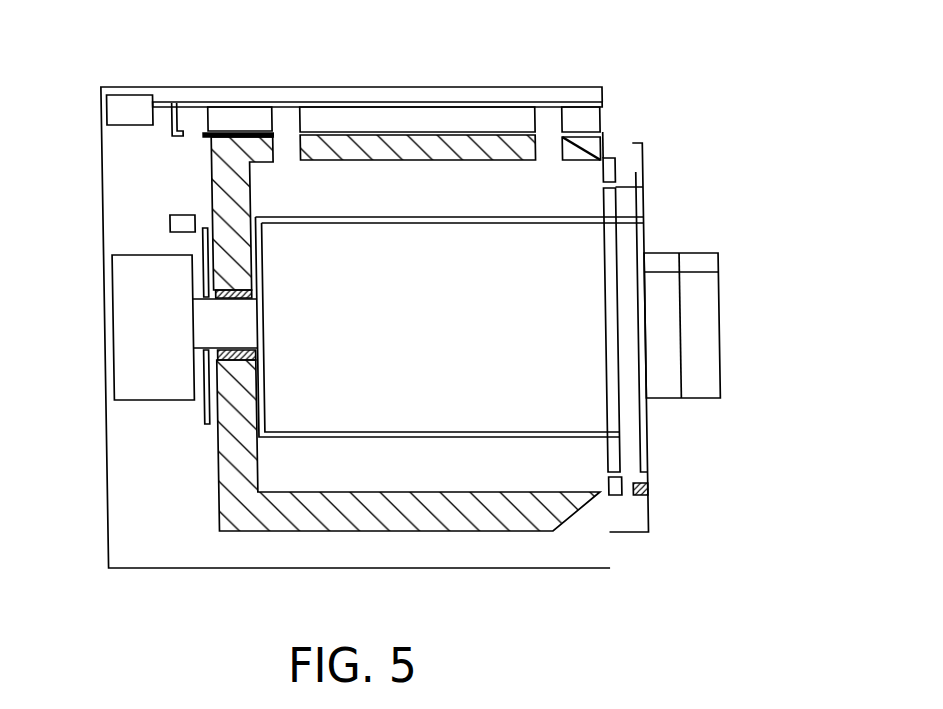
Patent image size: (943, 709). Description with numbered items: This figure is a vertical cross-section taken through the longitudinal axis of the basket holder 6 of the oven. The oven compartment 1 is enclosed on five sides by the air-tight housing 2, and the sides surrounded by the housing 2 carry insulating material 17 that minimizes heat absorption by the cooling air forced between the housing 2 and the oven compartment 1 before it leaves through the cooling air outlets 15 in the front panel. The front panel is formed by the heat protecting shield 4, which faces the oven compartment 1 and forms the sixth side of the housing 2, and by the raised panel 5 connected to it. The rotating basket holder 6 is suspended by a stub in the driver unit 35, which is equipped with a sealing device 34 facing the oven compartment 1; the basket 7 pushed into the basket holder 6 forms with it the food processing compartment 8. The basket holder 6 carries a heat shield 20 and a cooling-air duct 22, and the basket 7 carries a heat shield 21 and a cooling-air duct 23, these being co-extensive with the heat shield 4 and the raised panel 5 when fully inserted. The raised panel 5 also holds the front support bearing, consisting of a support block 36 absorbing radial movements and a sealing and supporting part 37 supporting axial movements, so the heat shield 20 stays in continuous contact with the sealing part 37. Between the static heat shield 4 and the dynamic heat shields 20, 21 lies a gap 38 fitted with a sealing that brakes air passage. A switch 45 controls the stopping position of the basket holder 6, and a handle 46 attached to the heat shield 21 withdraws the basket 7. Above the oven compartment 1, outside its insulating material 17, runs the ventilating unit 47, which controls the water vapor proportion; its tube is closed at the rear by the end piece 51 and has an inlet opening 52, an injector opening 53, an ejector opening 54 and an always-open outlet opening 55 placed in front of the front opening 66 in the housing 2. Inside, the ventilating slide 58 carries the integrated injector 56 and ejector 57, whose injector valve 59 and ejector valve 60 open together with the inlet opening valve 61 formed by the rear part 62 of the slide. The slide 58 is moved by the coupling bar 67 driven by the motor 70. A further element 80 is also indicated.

The oven compartment 1 is at (235, 480).
The housing 2 is at (98, 428).
The heat protecting shield 4 is at (607, 170).
The raised panel 5 is at (640, 152).
The basket holder 6 is at (273, 433).
The basket 7 is at (310, 432).
The food processing compartment 8 is at (356, 400).
The cooling air outlets 15 is at (600, 512).
The insulating material 17 is at (227, 192).
The heat shield of the basket holder 20 is at (638, 223).
The heat shield of the basket 21 is at (606, 382).
The cooling-air duct of the basket holder 22 is at (604, 207).
The cooling-air duct of the basket 23 is at (714, 273).
The sealing device 34 is at (211, 357).
The driver unit 35 is at (212, 325).
The support block 36 is at (639, 490).
The sealing and supporting part 37 is at (642, 480).
The gap 38 is at (612, 187).
The switch 45 is at (166, 223).
The handle 46 is at (695, 307).
The ventilating unit 47 is at (440, 102).
The end piece 51 is at (168, 120).
The inlet opening 52 is at (191, 137).
The injector opening 53 is at (286, 137).
The ejector opening 54 is at (548, 132).
The outlet opening 55 is at (605, 118).
The injector 56 is at (301, 130).
The ejector 57 is at (531, 122).
The ventilating slide 58 is at (396, 118).
The injector valve 59 is at (301, 132).
The ejector valve 60 is at (575, 130).
The inlet opening valve 61 is at (208, 130).
The rear part of the ventilating slide 62 is at (211, 107).
The front opening 66 is at (603, 120).
The coupling bar 67 is at (175, 105).
The motor 70 is at (116, 110).
The interior space 80 is at (129, 537).